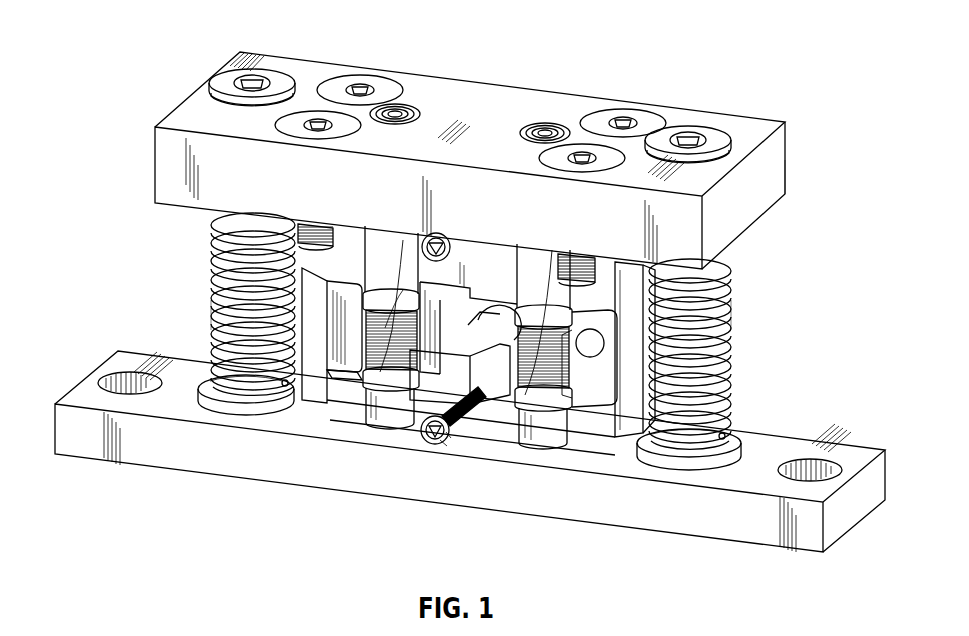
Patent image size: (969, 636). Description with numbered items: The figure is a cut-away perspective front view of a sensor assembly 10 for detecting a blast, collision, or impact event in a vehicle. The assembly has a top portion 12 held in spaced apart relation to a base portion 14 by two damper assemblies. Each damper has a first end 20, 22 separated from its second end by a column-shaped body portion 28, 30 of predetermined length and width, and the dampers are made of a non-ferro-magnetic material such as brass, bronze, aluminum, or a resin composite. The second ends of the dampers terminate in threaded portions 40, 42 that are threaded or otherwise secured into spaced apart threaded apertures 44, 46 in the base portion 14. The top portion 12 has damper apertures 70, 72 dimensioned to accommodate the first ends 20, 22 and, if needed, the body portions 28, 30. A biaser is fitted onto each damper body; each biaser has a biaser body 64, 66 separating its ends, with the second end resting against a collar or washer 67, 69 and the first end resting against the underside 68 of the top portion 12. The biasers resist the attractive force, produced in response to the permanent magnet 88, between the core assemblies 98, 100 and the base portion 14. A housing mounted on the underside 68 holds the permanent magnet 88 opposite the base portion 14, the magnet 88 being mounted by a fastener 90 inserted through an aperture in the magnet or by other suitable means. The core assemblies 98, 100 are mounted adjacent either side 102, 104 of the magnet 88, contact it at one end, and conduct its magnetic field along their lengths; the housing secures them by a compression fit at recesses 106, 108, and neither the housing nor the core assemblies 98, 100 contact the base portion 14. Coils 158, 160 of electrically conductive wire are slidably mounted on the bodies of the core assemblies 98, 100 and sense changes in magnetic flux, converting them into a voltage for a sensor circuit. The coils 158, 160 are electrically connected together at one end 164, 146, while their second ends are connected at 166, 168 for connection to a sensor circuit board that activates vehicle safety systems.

The sensor assembly 10 is at (113, 219).
The top portion 12 is at (520, 100).
The base portion 14 is at (245, 478).
The first end of damper assembly 20 is at (246, 80).
The first end of damper assembly 22 is at (722, 140).
The body portion 28 is at (232, 297).
The body portion 30 is at (703, 326).
The threaded portion 40 is at (248, 390).
The threaded portion 42 is at (692, 440).
The threaded aperture 44 is at (292, 385).
The threaded aperture 46 is at (735, 432).
The biaser body 64 is at (735, 274).
The biaser body 66 is at (205, 261).
The collar or washer 67 is at (723, 455).
The underside of top portion 68 is at (782, 207).
The collar or washer 69 is at (215, 382).
The damper aperture 70 is at (294, 92).
The damper aperture 72 is at (645, 150).
The permanent magnet 88 is at (498, 250).
The fastener 90 is at (440, 236).
The core assembly 98 is at (378, 238).
The core assembly 100 is at (538, 270).
The side of permanent magnet 102 is at (362, 237).
The side of permanent magnet 104 is at (596, 262).
The recess 106 is at (580, 302).
The recess 108 is at (368, 275).
The coil end 146 is at (588, 253).
The coil 158 is at (380, 390).
The coil 160 is at (470, 444).
The coil end 164 is at (403, 240).
The coil second end connection 166 is at (476, 252).
The coil second end connection 168 is at (593, 360).